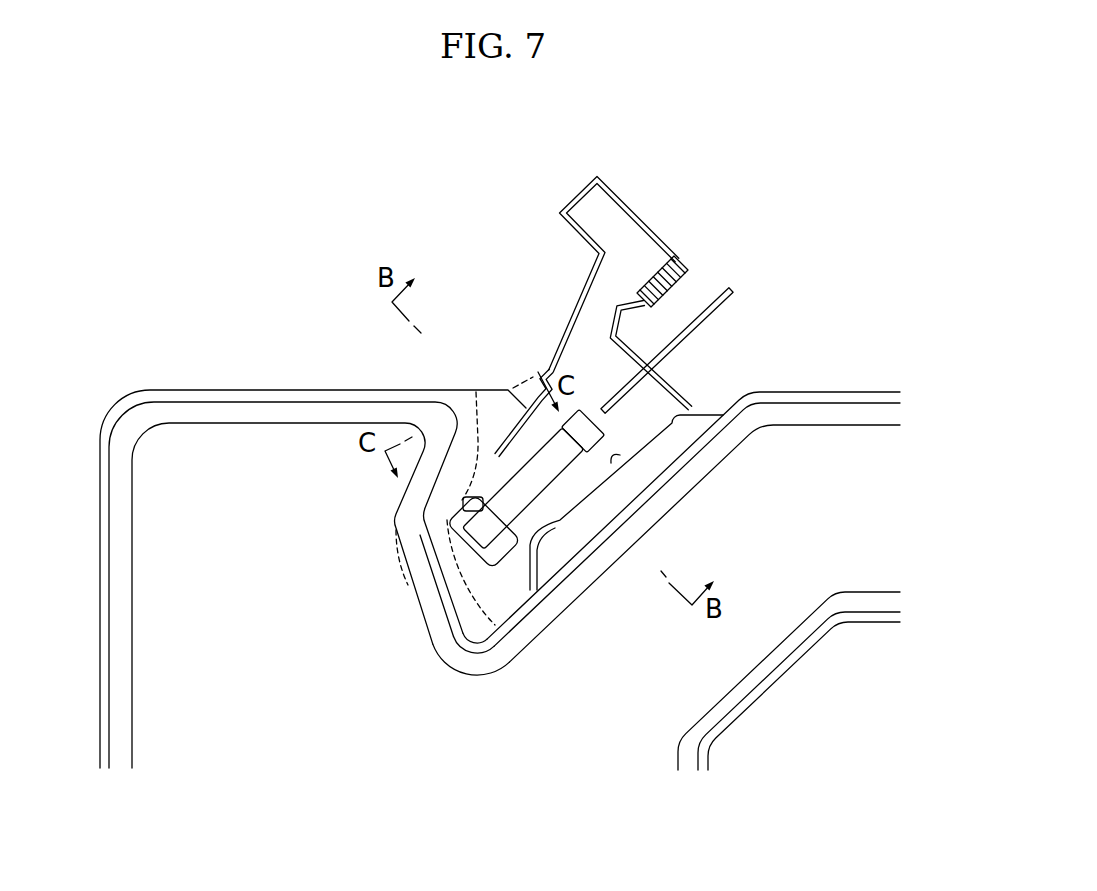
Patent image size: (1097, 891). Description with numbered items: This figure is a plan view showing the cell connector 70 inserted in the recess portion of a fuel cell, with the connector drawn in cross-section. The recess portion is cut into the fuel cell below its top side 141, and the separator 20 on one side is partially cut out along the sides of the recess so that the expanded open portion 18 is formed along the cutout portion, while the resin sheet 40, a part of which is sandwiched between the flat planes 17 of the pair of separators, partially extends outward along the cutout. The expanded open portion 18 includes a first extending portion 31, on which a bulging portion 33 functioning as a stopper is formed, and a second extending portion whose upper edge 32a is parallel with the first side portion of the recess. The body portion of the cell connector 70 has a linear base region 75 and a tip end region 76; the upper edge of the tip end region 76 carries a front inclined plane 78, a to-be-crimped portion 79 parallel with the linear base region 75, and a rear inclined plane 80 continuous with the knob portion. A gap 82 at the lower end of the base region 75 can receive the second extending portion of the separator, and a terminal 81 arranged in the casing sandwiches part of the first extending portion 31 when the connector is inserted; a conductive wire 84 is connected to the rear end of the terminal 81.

The top side 141 is at (300, 388).
The resin sheet 40 is at (841, 391).
The expanded open portion 18 is at (517, 648).
The flat plane 17 is at (414, 728).
The separator 20 is at (331, 755).
The cell connector 70 is at (640, 202).
The rear inclined plane 80 is at (571, 321).
The conductive wire 84 is at (736, 298).
The gap 82 is at (697, 407).
The to-be-crimped portion 79 is at (545, 462).
The terminal 81 is at (539, 643).
The bulging portion 33 is at (458, 505).
The first extending portion 31 is at (438, 556).
The front inclined plane 78 is at (476, 392).
The tip end region 76 is at (498, 583).
The linear base region 75 is at (610, 518).
The upper edge 32a is at (618, 459).